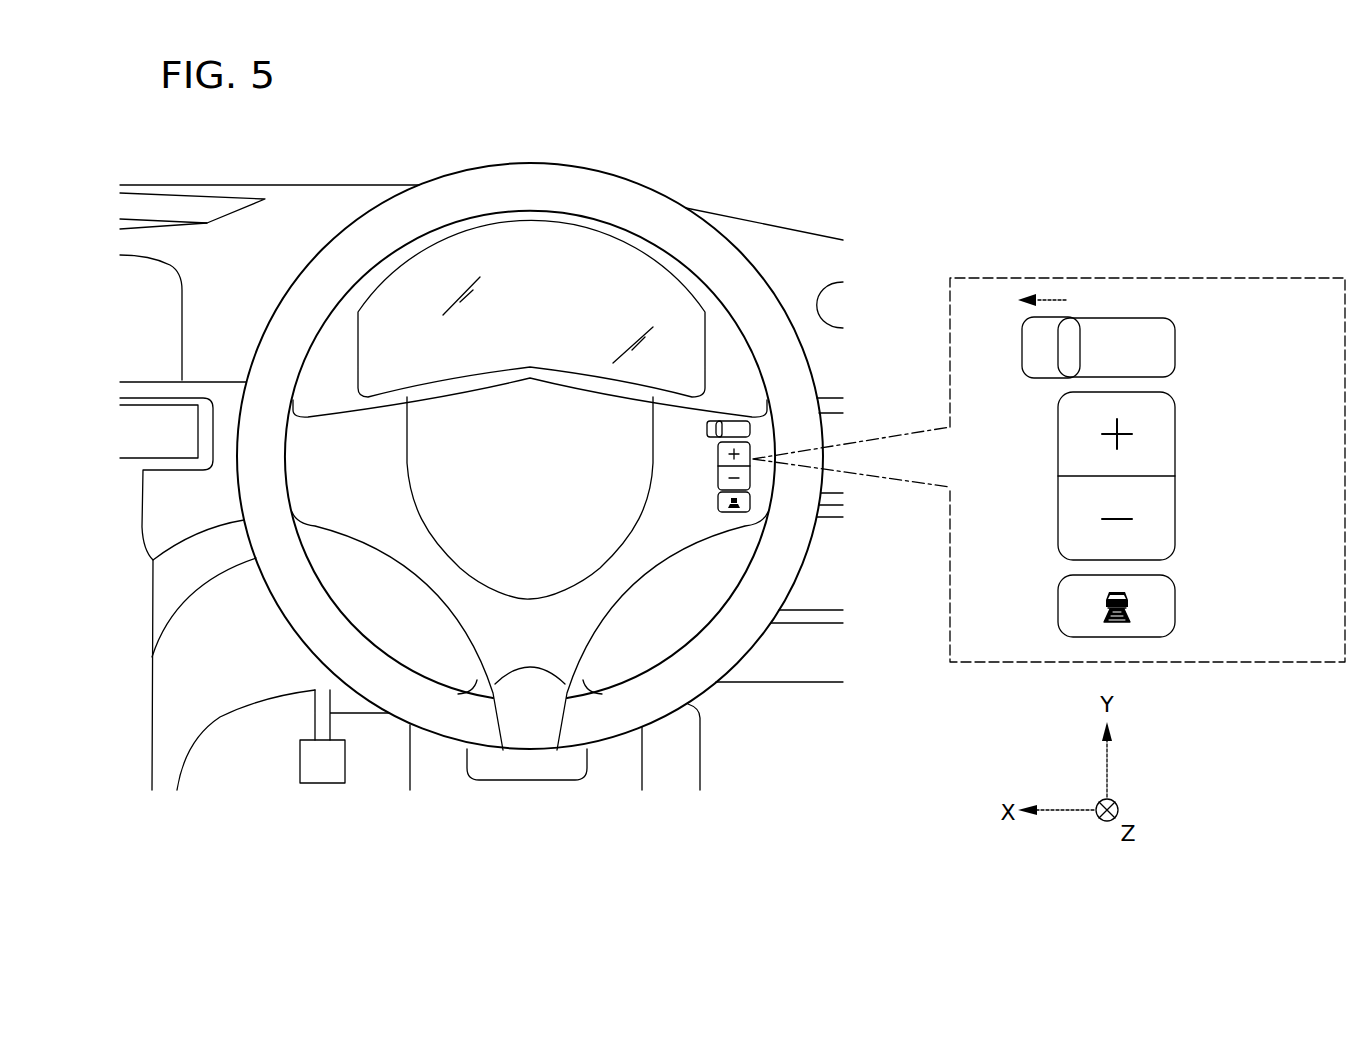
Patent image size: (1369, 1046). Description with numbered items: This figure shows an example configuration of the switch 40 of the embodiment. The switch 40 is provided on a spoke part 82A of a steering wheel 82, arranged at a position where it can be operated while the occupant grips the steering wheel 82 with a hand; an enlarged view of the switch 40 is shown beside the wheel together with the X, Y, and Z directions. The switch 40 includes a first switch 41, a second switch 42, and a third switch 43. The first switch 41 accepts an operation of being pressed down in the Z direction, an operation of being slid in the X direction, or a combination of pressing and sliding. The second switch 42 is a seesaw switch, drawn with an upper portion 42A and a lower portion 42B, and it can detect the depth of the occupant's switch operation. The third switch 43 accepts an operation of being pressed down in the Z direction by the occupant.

The steering wheel 82 is at (529, 163).
The spoke part 82A is at (700, 510).
The switch 40 is at (1145, 277).
The first switch 41 is at (1176, 348).
The second switch 42 is at (1189, 476).
The plus portion of second switch 42A is at (1176, 432).
The minus portion of second switch 42B is at (1182, 520).
The third switch 43 is at (1176, 605).